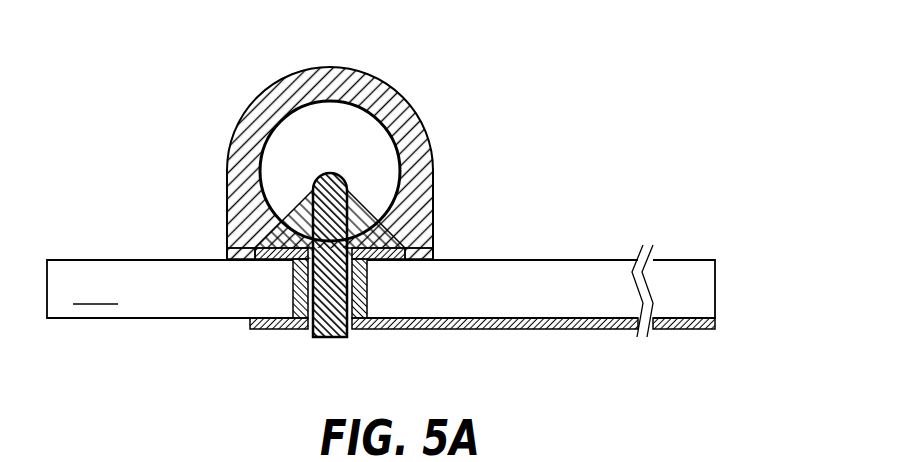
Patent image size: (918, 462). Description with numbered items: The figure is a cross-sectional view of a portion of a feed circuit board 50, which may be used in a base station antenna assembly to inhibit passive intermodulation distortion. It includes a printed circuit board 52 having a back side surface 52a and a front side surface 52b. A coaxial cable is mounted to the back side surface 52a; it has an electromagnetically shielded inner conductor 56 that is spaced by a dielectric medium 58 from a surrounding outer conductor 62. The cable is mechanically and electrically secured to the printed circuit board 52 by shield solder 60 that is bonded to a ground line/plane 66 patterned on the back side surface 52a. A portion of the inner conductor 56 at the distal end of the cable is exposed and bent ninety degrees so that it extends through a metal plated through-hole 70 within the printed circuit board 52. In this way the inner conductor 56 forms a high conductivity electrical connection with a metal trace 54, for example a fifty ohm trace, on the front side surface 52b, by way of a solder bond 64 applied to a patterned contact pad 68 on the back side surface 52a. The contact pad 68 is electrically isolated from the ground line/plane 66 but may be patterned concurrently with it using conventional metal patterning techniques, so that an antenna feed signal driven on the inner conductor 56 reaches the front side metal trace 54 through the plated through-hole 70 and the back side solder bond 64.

The feed circuit board 50 is at (358, 203).
The printed circuit board 52 is at (696, 302).
The back side surface 52a is at (506, 266).
The front side surface 52b is at (472, 311).
The metal trace 54 is at (481, 330).
The inner conductor 56 is at (313, 185).
The dielectric medium 58 is at (338, 148).
The shield solder 60 is at (345, 70).
The outer conductor 62 is at (418, 133).
The solder bond 64 is at (358, 222).
The ground line/plane 66 is at (228, 254).
The contact pad 68 is at (273, 262).
The plated through-hole 70 is at (293, 291).